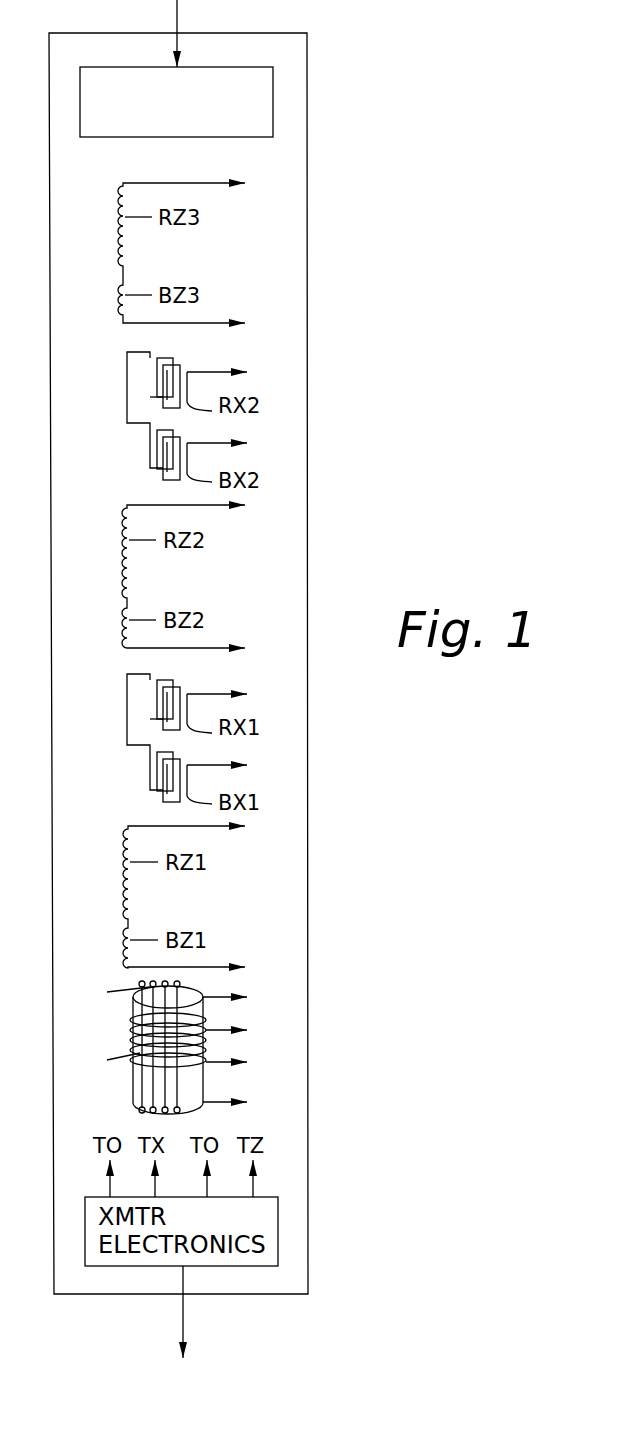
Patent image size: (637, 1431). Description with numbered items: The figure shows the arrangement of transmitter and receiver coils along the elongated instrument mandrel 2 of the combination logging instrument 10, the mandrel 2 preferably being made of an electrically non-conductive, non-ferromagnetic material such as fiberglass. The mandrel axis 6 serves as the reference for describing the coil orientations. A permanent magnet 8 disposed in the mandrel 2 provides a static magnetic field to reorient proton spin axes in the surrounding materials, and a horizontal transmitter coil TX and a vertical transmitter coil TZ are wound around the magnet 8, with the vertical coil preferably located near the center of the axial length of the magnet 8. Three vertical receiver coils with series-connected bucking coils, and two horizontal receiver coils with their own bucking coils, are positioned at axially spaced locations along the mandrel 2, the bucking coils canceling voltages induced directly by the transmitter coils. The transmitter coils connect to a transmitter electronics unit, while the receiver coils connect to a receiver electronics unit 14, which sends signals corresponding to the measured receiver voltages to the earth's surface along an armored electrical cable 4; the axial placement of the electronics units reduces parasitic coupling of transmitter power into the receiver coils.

The instrument mandrel 2 is at (308, 551).
The armored electrical cable 4 is at (178, 13).
The mandrel axis 6 is at (184, 1318).
The permanent magnet 8 is at (133, 1090).
The combination logging instrument 10 is at (417, 410).
The receiver electronics unit 14 is at (140, 137).